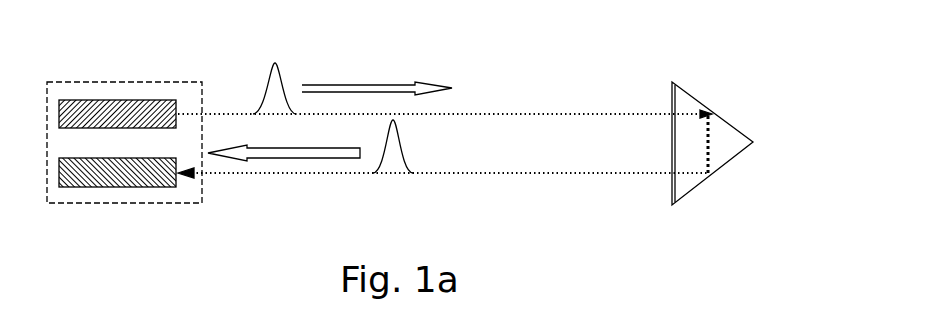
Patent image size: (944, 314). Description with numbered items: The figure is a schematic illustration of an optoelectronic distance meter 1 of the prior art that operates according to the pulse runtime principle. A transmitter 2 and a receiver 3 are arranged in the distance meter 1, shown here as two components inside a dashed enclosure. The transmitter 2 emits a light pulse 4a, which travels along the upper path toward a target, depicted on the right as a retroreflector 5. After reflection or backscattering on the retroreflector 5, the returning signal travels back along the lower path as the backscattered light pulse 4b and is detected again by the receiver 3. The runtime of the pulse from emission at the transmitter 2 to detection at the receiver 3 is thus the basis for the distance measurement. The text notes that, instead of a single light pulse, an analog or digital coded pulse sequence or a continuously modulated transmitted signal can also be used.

The distance meter 1 is at (62, 203).
The transmitter 2 is at (108, 108).
The receiver 3 is at (147, 185).
The light pulse 4a is at (275, 63).
The backscattered light pulse 4b is at (402, 157).
The retroreflector 5 is at (685, 102).